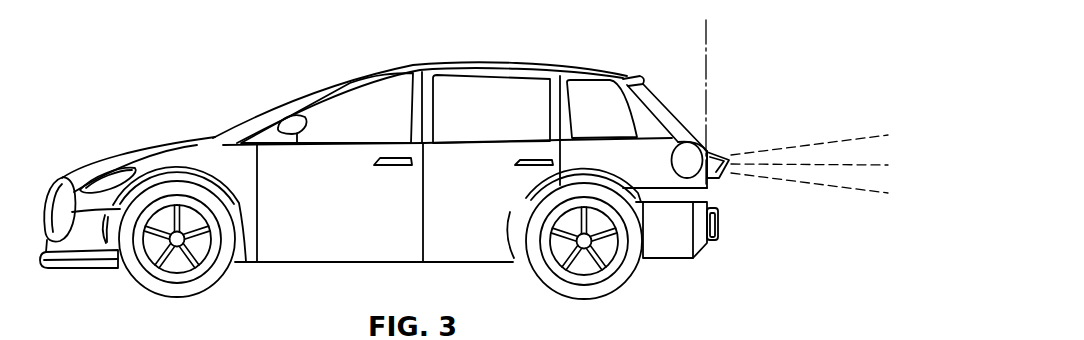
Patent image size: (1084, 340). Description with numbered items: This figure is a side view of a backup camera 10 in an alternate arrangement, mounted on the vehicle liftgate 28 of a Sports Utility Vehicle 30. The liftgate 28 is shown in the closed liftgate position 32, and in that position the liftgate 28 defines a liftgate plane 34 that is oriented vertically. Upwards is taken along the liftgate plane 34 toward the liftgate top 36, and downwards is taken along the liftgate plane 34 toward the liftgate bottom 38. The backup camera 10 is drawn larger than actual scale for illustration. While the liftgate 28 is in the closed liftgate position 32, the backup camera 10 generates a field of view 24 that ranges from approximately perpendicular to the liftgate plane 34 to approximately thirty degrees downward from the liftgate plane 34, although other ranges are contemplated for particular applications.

The backup camera 10 is at (716, 134).
The field of view 24 is at (853, 137).
The vehicle liftgate 28 is at (668, 122).
The Sports Utility Vehicle 30 is at (407, 64).
The closed liftgate position 32 is at (644, 94).
The liftgate plane 34 is at (707, 68).
The liftgate top 36 is at (636, 78).
The liftgate bottom 38 is at (711, 190).